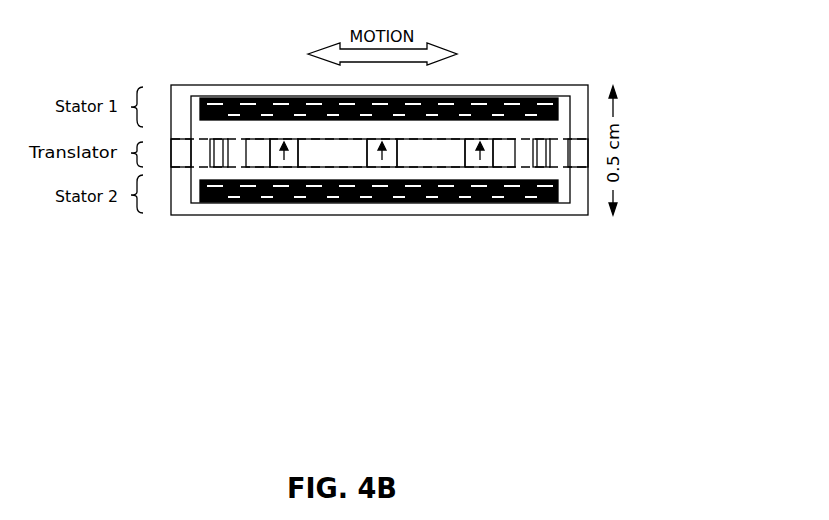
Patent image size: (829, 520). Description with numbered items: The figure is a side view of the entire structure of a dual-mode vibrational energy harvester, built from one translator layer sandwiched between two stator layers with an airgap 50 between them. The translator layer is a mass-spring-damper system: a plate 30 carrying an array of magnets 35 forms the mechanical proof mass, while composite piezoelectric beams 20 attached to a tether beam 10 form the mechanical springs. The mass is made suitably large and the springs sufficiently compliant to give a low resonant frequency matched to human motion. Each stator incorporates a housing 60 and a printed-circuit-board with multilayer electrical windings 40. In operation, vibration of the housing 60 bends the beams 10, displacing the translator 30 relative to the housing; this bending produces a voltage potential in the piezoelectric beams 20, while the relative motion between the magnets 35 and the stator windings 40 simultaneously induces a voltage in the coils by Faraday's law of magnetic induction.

The tether beam 10 is at (379, 271).
The composite piezoelectric beam 20 is at (548, 170).
The plate 30 is at (335, 153).
The magnets 35 is at (390, 162).
The printed-circuit-board with multilayer electrical windings 40 is at (263, 198).
The airgap 50 is at (328, 175).
The housing 60 is at (578, 192).